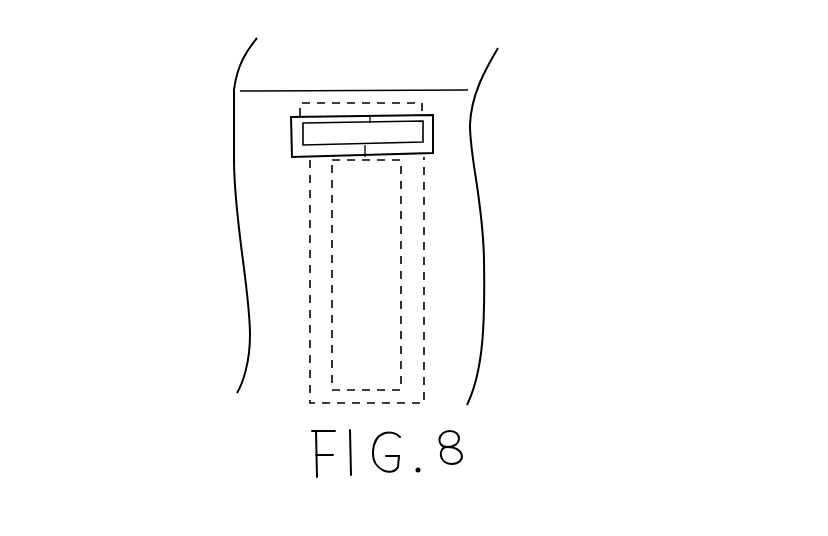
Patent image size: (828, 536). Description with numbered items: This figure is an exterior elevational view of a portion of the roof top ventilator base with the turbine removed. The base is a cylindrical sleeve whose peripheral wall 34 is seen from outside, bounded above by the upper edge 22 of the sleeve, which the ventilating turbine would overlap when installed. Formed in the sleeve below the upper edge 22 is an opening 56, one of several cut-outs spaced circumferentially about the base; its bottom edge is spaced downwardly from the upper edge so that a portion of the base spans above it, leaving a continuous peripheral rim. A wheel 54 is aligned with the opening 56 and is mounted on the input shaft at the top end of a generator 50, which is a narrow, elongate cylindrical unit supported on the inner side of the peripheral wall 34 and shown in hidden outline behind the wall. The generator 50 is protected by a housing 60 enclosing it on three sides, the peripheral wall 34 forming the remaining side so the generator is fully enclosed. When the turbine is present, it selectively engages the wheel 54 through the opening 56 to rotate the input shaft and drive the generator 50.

The upper edge 22 is at (427, 88).
The peripheral wall 34 is at (263, 182).
The generator 50 is at (402, 208).
The wheel 54 is at (418, 130).
The opening 56 is at (433, 140).
The housing 60 is at (425, 248).